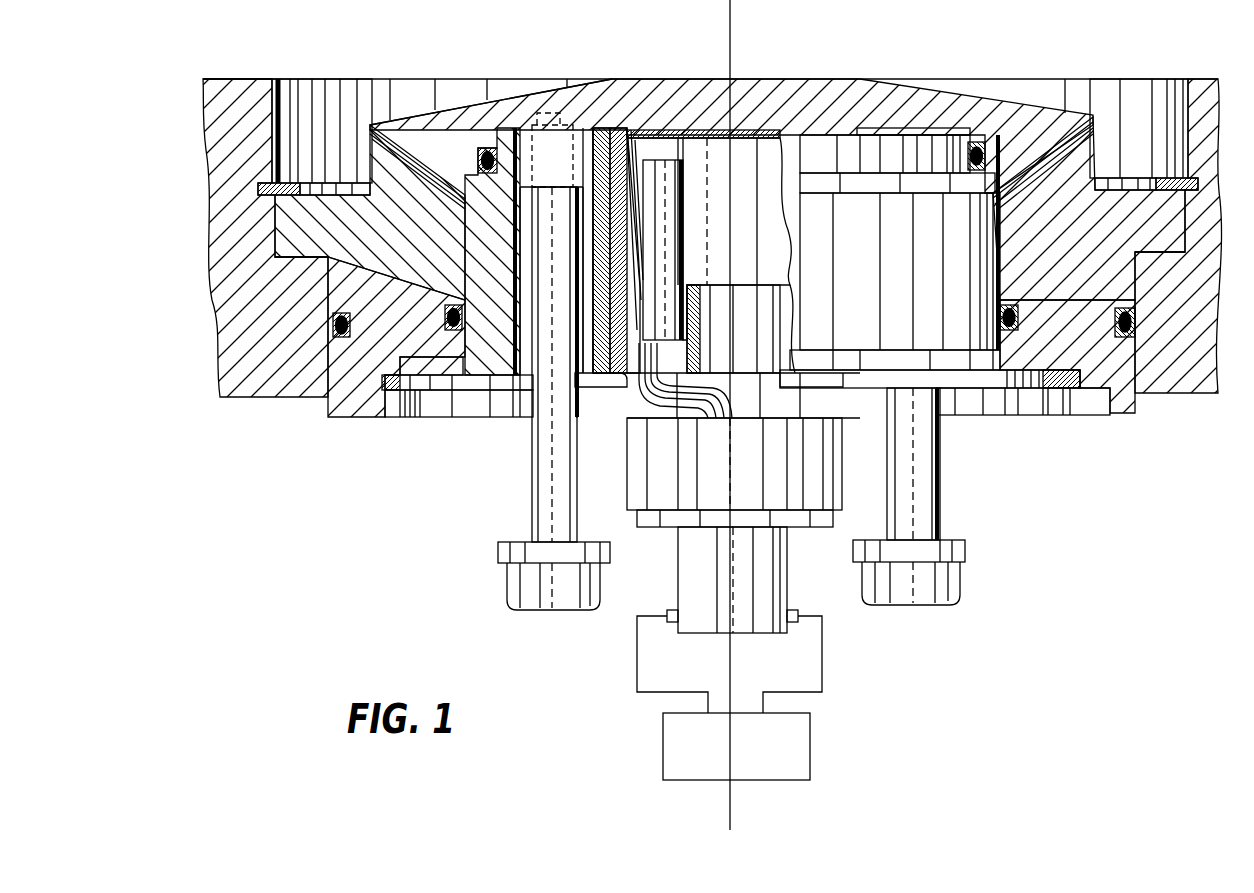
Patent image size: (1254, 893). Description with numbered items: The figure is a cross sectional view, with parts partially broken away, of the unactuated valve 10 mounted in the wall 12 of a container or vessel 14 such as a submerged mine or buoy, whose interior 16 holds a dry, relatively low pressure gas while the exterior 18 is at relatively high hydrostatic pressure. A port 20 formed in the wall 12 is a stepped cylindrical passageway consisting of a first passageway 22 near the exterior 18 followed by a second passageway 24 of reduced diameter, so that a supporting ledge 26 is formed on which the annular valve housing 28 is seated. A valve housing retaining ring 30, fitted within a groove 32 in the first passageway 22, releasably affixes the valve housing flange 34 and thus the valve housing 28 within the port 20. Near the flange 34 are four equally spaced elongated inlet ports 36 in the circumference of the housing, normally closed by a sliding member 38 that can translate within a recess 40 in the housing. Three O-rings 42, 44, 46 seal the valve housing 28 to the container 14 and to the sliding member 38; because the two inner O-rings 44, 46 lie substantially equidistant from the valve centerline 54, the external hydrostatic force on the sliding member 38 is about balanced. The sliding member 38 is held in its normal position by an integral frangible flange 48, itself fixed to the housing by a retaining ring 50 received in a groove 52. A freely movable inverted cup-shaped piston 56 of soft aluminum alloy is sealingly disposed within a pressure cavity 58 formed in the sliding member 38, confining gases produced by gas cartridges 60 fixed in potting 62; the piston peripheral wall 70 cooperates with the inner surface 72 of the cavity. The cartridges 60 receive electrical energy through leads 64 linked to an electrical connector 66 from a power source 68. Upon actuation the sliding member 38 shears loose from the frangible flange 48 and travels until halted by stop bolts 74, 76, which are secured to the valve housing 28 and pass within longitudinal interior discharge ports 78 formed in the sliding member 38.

The unactuated valve 10 is at (542, 46).
The wall 12 is at (249, 286).
The container or vessel 14 is at (243, 78).
The interior 16 is at (443, 623).
The exterior 18 is at (781, 28).
The port 20 is at (360, 78).
The first passageway 22 is at (278, 92).
The second passageway 24 is at (328, 283).
The supporting ledge 26 is at (1162, 258).
The valve housing 28 is at (793, 90).
The valve housing retaining ring 30 is at (1162, 178).
The groove 32 is at (262, 178).
The valve housing flange 34 is at (290, 210).
The inlet ports 36 is at (428, 228).
The sliding member 38 is at (500, 297).
The recess 40 is at (915, 126).
The O-ring 42 is at (350, 325).
The O-ring 44 is at (445, 325).
The O-ring 46 is at (478, 165).
The frangible flange 48 is at (445, 375).
The retaining ring 50 is at (410, 417).
The groove 52 is at (384, 395).
The centerline 54 is at (730, 24).
The piston 56 is at (768, 128).
The pressure cavity 58 is at (765, 235).
The gas cartridges 60 is at (673, 291).
The potting 62 is at (758, 343).
The leads 64 is at (683, 420).
The electrical connector 66 is at (765, 598).
The power source 68 is at (710, 761).
The piston peripheral wall 70 is at (637, 205).
The inner surface 72 is at (629, 150).
The stop bolt 74 is at (600, 598).
The stop bolt 76 is at (960, 598).
The discharge ports 78 is at (580, 417).